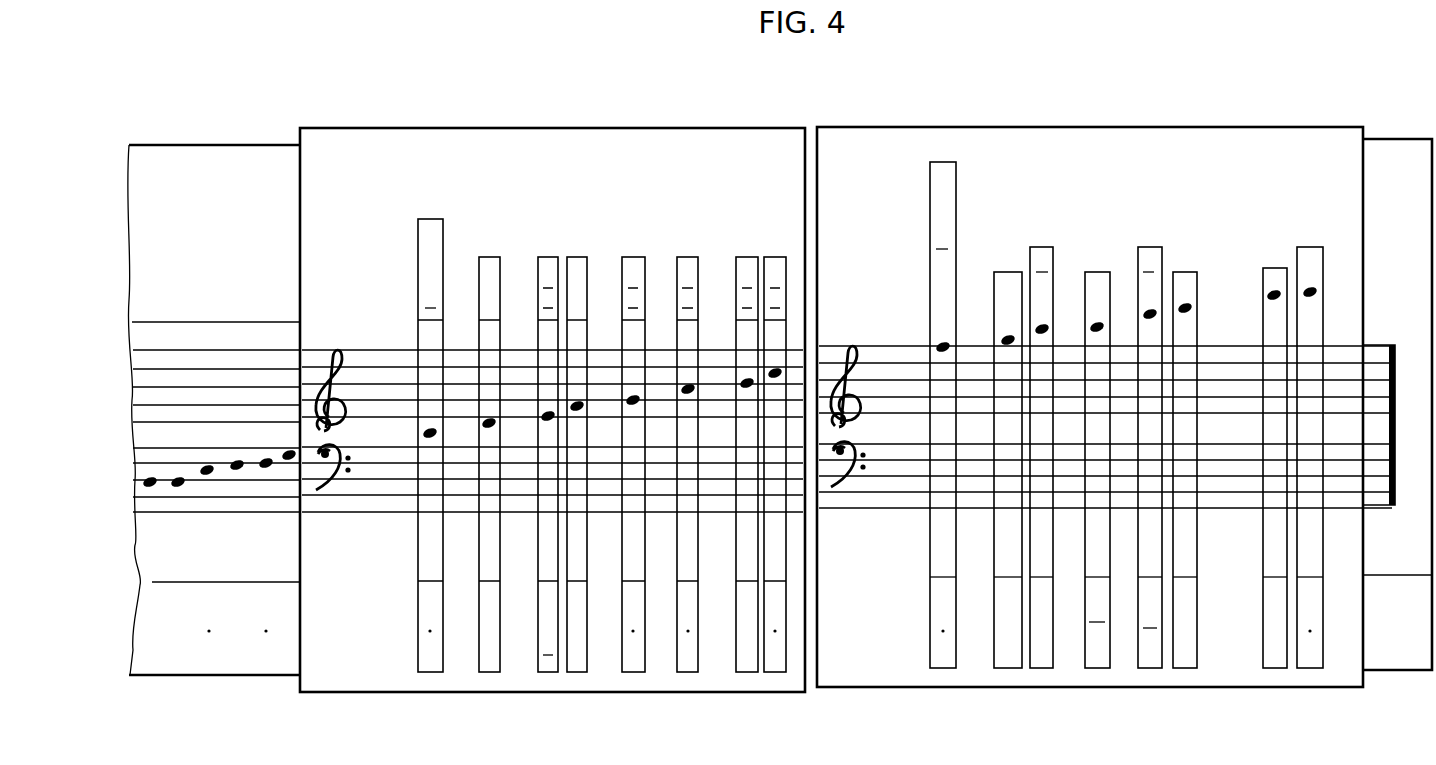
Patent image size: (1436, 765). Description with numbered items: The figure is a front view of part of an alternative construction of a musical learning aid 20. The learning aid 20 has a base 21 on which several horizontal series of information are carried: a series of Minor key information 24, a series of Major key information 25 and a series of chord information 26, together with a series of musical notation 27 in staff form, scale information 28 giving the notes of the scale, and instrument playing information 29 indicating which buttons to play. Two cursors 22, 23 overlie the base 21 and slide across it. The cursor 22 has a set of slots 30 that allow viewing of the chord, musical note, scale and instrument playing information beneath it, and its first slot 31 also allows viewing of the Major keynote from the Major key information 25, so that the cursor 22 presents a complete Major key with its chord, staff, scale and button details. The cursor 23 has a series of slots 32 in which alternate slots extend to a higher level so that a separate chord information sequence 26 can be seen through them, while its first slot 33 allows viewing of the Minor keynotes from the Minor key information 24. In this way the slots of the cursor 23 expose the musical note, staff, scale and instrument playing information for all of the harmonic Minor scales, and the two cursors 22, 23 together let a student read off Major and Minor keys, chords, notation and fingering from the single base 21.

The learning aid 20 is at (1166, 110).
The base 21 is at (218, 676).
The cursor 22 is at (513, 128).
The cursor 23 is at (998, 127).
The Minor key information 24 is at (216, 144).
The Major key information 25 is at (128, 240).
The chord information 26 is at (128, 300).
The musical notation 27 is at (138, 402).
The scale information 28 is at (160, 548).
The instrument playing information 29 is at (178, 612).
The slots 30 is at (580, 257).
The first slot 31 is at (432, 218).
The slots 32 is at (1163, 258).
The first slot 33 is at (957, 212).